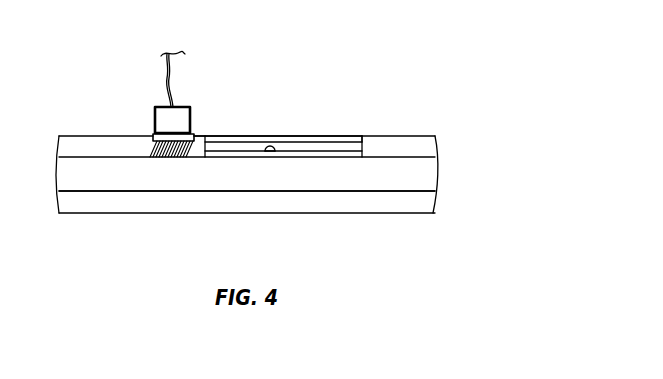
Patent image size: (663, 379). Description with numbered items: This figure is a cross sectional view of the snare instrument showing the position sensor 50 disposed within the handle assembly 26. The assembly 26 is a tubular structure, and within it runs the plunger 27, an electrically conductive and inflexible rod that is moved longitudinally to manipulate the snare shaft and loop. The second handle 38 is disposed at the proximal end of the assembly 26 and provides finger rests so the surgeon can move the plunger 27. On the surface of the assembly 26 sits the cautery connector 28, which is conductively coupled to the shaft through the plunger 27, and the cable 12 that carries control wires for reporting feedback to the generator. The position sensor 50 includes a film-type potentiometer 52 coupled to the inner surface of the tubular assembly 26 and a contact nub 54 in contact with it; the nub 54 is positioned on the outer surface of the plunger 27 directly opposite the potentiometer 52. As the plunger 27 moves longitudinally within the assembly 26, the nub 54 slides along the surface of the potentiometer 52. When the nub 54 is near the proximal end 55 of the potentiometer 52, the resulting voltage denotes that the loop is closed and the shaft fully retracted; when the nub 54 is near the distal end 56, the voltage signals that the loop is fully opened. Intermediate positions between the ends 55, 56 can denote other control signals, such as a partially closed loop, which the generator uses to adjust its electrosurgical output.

The cable 12 is at (171, 80).
The handle assembly 26 is at (425, 136).
The plunger 27 is at (360, 192).
The cautery connector 28 is at (190, 113).
The second handle 38 is at (150, 147).
The position sensor 50 is at (318, 118).
The film-type potentiometer 52 is at (260, 137).
The contact nub 54 is at (275, 153).
The proximal end 55 is at (207, 137).
The distal end 56 is at (363, 137).